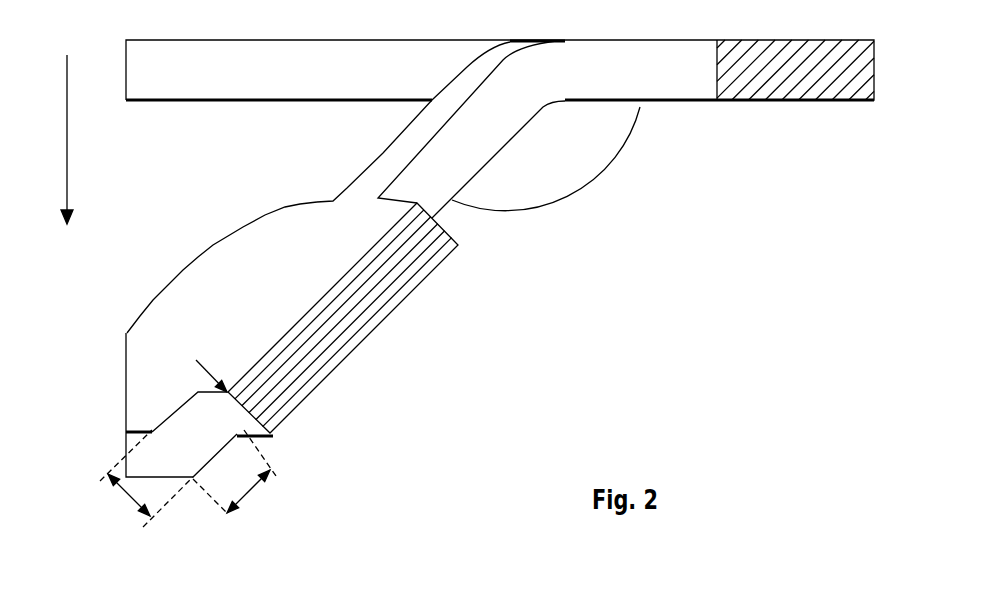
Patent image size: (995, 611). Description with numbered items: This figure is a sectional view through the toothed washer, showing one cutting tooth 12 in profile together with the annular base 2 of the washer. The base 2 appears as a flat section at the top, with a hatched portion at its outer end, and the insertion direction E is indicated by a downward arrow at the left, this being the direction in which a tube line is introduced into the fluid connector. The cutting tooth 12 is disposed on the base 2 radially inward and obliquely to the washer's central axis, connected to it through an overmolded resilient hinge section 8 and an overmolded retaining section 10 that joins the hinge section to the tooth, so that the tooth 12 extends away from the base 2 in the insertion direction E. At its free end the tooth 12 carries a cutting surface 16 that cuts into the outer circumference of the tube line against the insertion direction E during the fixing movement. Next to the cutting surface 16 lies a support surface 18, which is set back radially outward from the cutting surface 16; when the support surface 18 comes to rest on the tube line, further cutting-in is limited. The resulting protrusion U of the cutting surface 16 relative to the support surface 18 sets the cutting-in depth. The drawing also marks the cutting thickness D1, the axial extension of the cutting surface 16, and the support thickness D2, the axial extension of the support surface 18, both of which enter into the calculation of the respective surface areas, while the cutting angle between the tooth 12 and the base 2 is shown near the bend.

The annular base 2 is at (837, 88).
The resilient hinge section 8 is at (513, 48).
The retaining section 10 is at (450, 93).
The cutting tooth 12 is at (222, 280).
The cutting surface 16 is at (127, 433).
The support surface 18 is at (273, 436).
The insertion direction E is at (74, 139).
The cutting thickness D1 is at (141, 478).
The support thickness D2 is at (218, 364).
The protrusion U is at (237, 477).